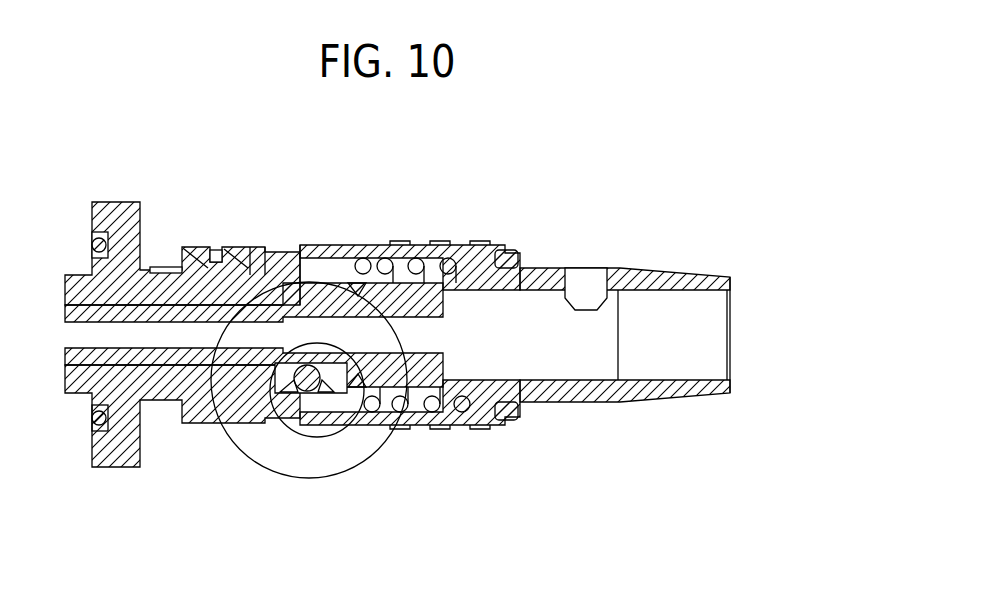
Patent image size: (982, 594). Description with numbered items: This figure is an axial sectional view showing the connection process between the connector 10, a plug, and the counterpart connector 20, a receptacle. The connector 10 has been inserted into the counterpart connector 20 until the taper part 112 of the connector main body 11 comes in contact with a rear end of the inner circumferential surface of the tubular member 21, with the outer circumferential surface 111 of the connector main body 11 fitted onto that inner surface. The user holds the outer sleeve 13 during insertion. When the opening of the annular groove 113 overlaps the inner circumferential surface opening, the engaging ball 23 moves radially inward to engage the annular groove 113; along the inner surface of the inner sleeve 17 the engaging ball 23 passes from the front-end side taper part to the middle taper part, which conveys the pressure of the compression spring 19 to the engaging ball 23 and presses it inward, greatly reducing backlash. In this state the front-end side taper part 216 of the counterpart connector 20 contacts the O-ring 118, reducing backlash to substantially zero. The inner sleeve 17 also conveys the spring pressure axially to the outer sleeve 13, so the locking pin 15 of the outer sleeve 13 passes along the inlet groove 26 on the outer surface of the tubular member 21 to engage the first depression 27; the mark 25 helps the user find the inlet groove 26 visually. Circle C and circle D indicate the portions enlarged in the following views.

The connector 10 is at (474, 187).
The connector main body 11 is at (660, 268).
The outer sleeve 13 is at (475, 244).
The locking pin 15 is at (232, 252).
The inner sleeve 17 is at (323, 395).
The compression spring 19 is at (437, 412).
The counterpart connector 20 is at (132, 189).
The tubular member 21 is at (193, 277).
The engaging ball 23 is at (300, 388).
The mark 25 is at (164, 267).
The inlet groove 26 is at (260, 262).
The first depression 27 is at (217, 252).
The outer circumferential surface 111 is at (285, 298).
The taper part 112 is at (175, 395).
The annular groove 113 is at (308, 392).
The O-ring 118 is at (356, 288).
The front-end side taper part 216 is at (362, 292).
The circle C portion C is at (236, 448).
The circle D portion D is at (352, 425).